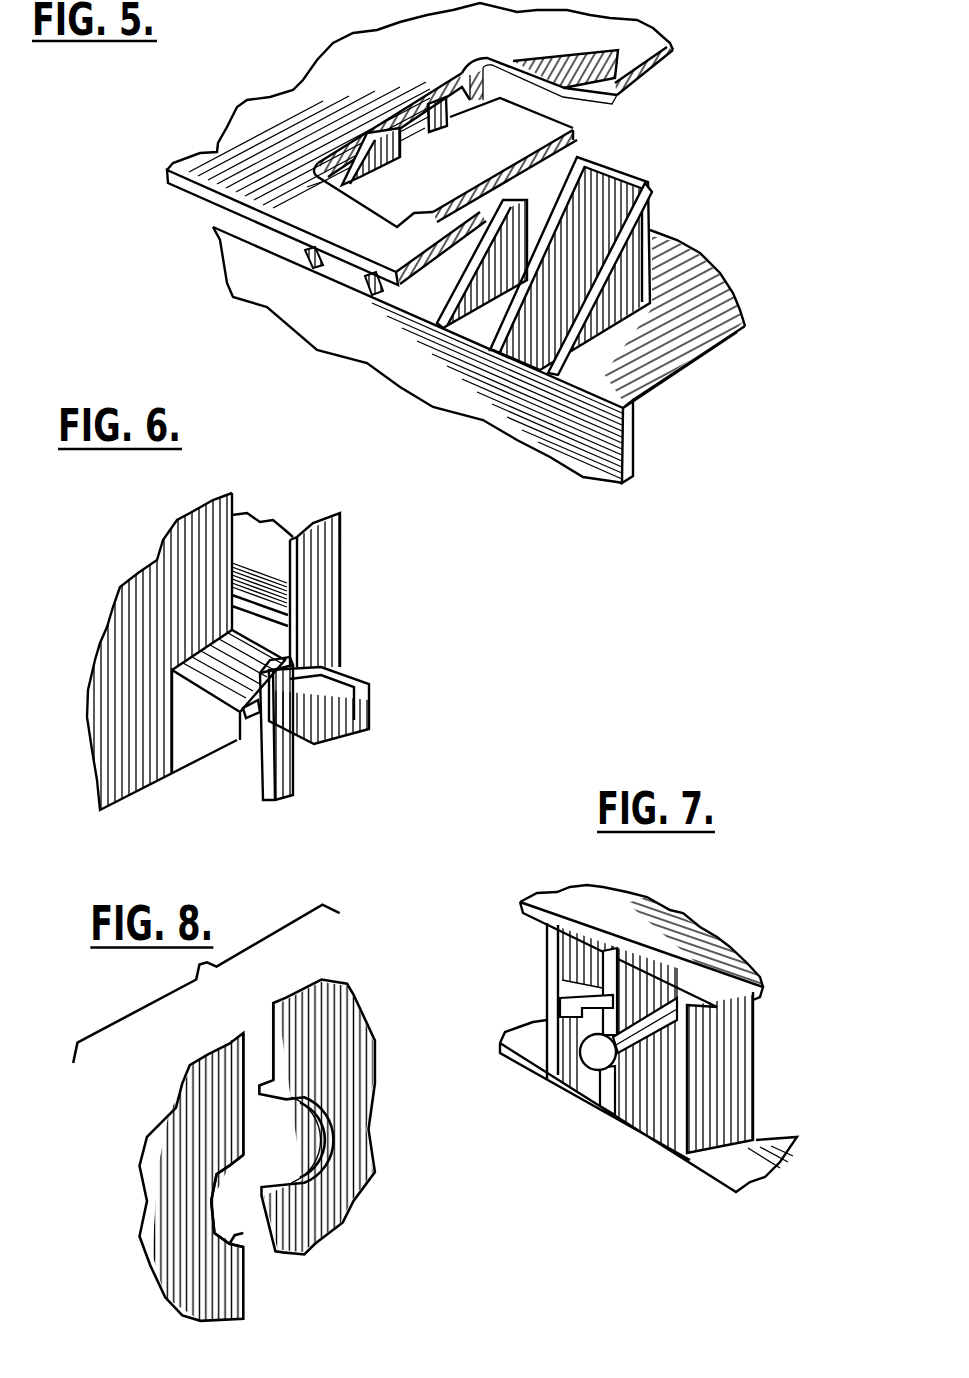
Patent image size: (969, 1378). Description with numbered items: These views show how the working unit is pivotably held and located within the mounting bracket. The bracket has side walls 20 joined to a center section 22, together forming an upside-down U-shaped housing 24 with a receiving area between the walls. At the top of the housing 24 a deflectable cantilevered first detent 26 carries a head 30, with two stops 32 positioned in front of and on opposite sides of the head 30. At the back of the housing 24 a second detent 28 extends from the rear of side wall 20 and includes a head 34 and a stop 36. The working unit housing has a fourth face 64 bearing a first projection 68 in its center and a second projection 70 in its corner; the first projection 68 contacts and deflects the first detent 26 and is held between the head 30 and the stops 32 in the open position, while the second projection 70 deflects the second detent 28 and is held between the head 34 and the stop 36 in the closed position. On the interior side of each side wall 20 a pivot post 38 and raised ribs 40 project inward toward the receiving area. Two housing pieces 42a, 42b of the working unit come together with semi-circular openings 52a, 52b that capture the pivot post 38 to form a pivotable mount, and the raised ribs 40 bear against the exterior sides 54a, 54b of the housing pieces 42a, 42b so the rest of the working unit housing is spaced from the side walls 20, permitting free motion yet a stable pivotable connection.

In FIG. 6, the side wall 20 is at (343, 566).
In FIG. 7, the side wall 20 is at (693, 953).
In FIG. 5, the center section 22 is at (283, 120).
In FIG. 5, the housing 24 is at (218, 157).
In FIG. 5, the first detent 26 is at (496, 153).
In FIG. 6, the second detent 28 is at (280, 689).
In FIG. 5, the head 30 is at (575, 142).
In FIG. 5, the stops 32 is at (450, 80).
In FIG. 6, the head 34 is at (270, 667).
In FIG. 6, the stop 36 is at (258, 718).
In FIG. 7, the pivot post 38 is at (596, 1055).
In FIG. 7, the raised ribs 40 is at (580, 1028).
In FIG. 8, the housing piece 42a is at (313, 1173).
In FIG. 8, the housing piece 42b is at (177, 1113).
In FIG. 8, the semi-circular opening 52a is at (287, 1098).
In FIG. 8, the semi-circular opening 52b is at (213, 1185).
In FIG. 8, the exterior side 54a is at (320, 998).
In FIG. 8, the exterior side 54b is at (217, 1050).
In FIG. 5, the fourth face 64 is at (707, 310).
In FIG. 6, the fourth face 64 is at (122, 705).
In FIG. 5, the first projection 68 is at (650, 212).
In FIG. 6, the second projection 70 is at (205, 667).